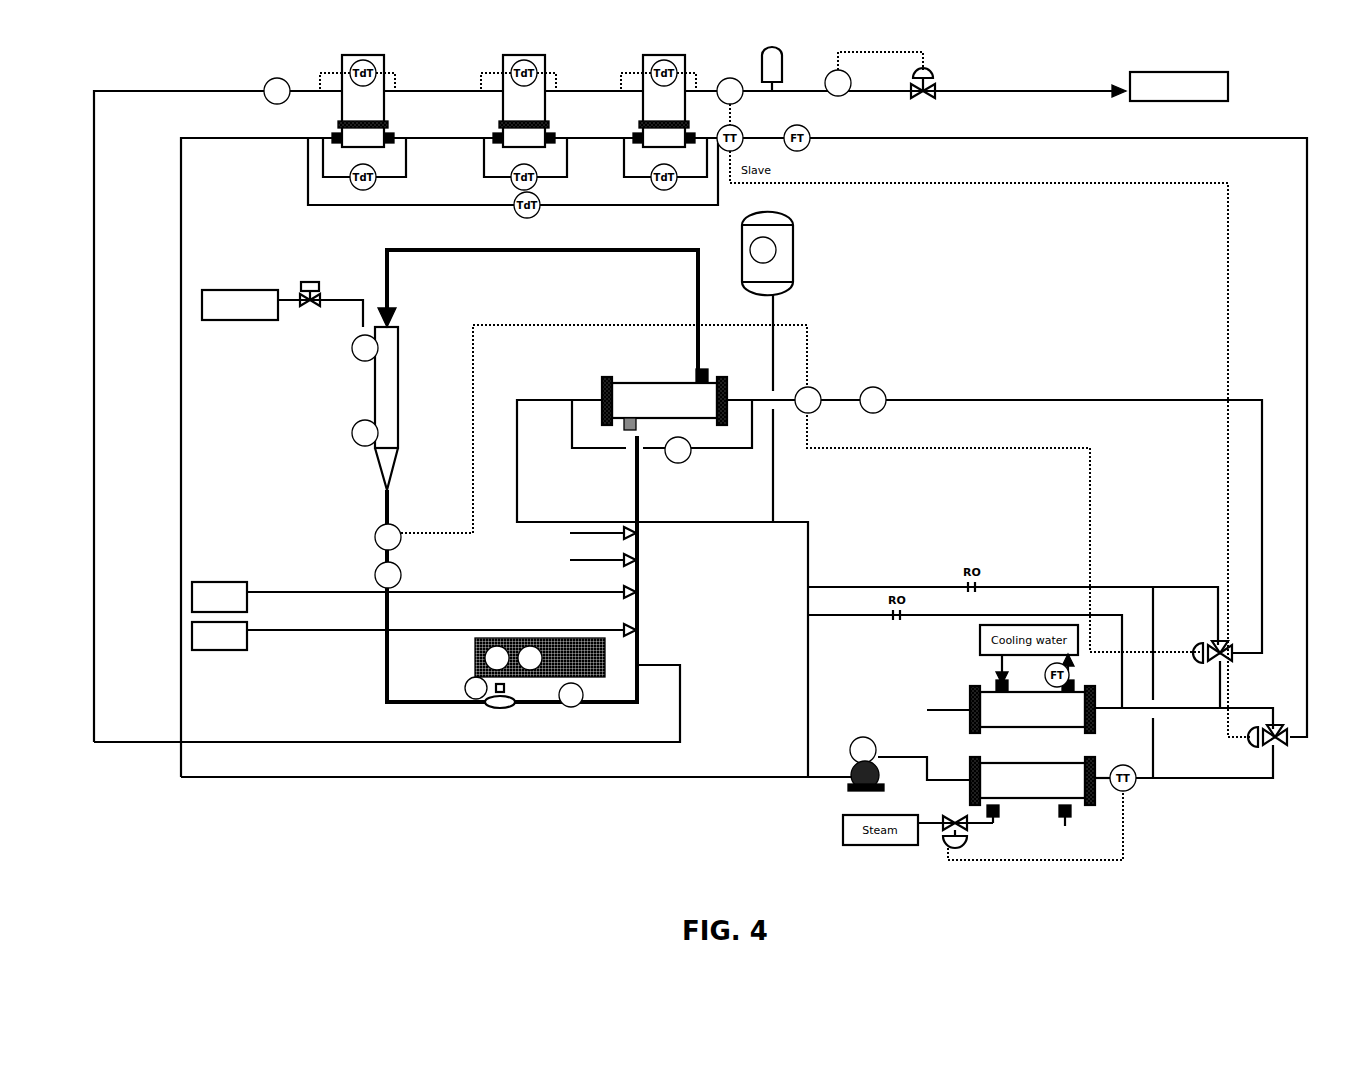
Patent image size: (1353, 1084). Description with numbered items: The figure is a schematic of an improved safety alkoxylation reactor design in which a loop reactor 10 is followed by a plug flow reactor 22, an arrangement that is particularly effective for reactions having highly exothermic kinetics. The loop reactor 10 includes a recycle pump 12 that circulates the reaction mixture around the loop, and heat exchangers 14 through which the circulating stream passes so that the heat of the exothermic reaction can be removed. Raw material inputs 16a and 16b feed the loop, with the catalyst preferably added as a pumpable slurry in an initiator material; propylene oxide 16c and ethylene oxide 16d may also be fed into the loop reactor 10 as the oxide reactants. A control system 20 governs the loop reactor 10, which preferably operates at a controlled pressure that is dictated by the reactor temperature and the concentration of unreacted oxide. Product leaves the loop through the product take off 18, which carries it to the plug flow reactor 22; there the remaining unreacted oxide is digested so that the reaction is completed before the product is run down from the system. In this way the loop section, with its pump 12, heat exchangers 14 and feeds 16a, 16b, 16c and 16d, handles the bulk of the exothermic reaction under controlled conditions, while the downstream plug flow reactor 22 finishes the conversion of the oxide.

The loop reactor 10 is at (348, 250).
The recycle pump 12 is at (478, 712).
The heat exchanger 14 is at (675, 402).
The raw material input 16a is at (510, 541).
The raw material input 16b is at (515, 571).
The propylene oxide 16c is at (210, 600).
The ethylene oxide 16d is at (210, 630).
The product take off 18 is at (680, 712).
The control system 20 is at (545, 677).
The plug flow reactor 22 is at (268, 120).